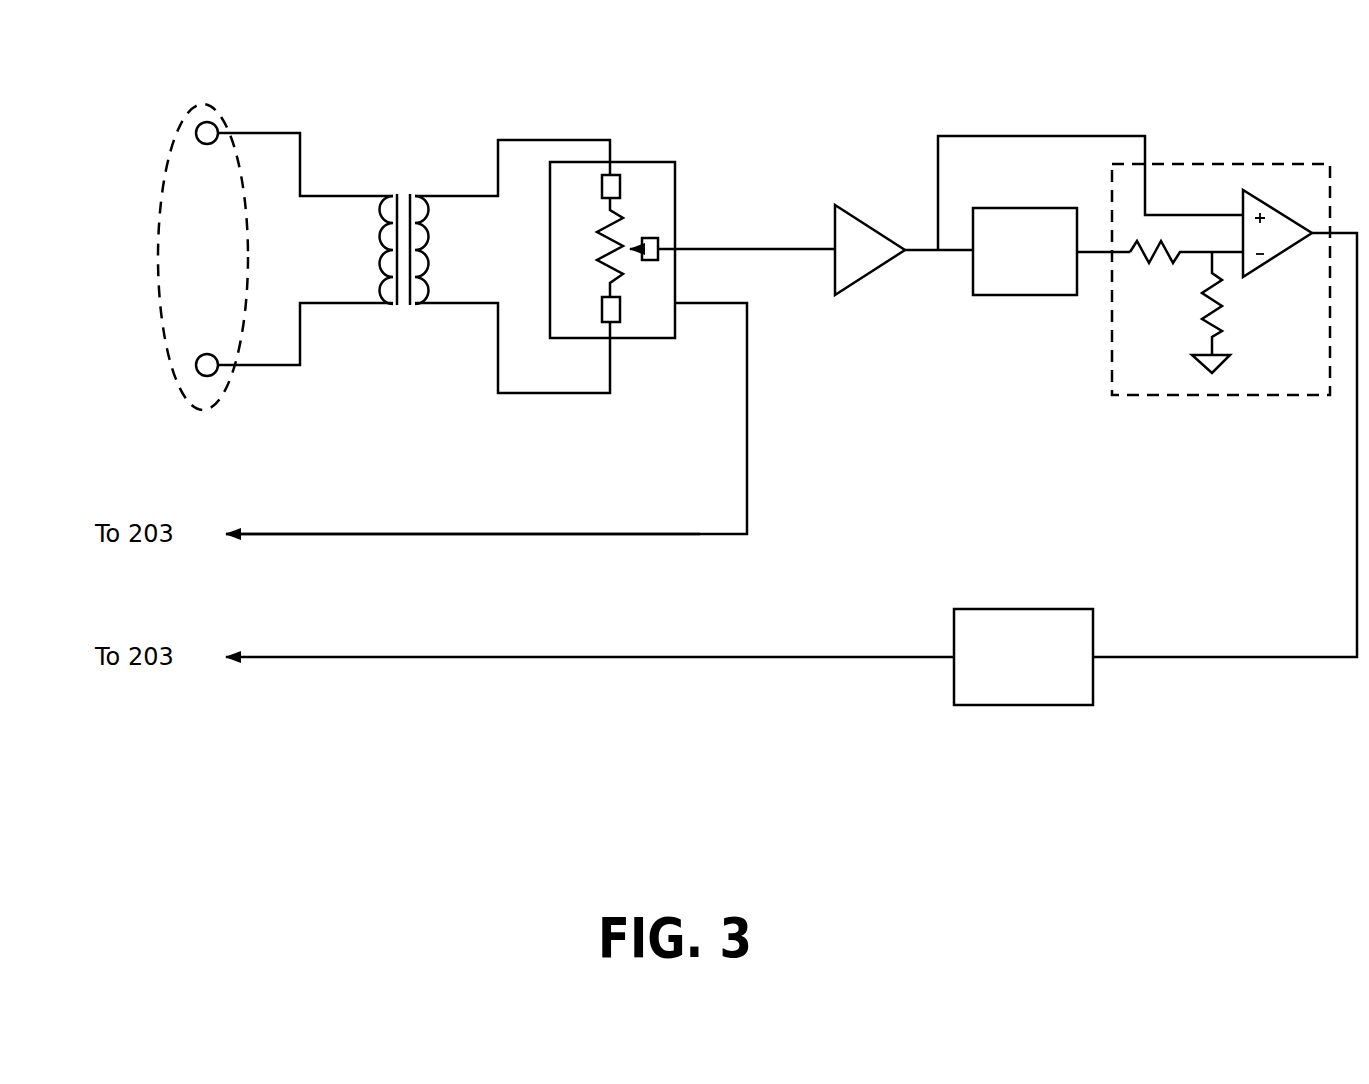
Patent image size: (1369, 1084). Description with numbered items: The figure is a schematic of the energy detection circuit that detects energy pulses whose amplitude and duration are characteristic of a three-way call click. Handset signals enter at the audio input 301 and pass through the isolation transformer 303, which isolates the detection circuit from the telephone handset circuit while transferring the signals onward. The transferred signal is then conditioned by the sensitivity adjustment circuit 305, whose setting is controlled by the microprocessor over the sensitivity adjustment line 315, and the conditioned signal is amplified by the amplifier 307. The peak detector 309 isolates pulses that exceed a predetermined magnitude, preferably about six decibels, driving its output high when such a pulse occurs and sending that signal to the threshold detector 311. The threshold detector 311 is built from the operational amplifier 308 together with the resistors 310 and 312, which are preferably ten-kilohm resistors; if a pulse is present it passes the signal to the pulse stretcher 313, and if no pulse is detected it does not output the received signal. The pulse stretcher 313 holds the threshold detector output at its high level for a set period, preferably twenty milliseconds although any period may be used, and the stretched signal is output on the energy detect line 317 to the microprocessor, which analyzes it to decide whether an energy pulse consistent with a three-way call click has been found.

The audio input 301 is at (170, 134).
The isolation transformer 303 is at (420, 160).
The sensitivity adjustment circuit 305 is at (686, 207).
The amplifier 307 is at (873, 202).
The operational amplifier 308 is at (1259, 274).
The peak detector 309 is at (1025, 306).
The resistor 310 is at (1231, 331).
The threshold detector 311 is at (1225, 366).
The resistor 312 is at (1131, 273).
The pulse stretcher 313 is at (998, 598).
The sensitivity adjustment line 315 is at (487, 522).
The energy detect line 317 is at (435, 670).